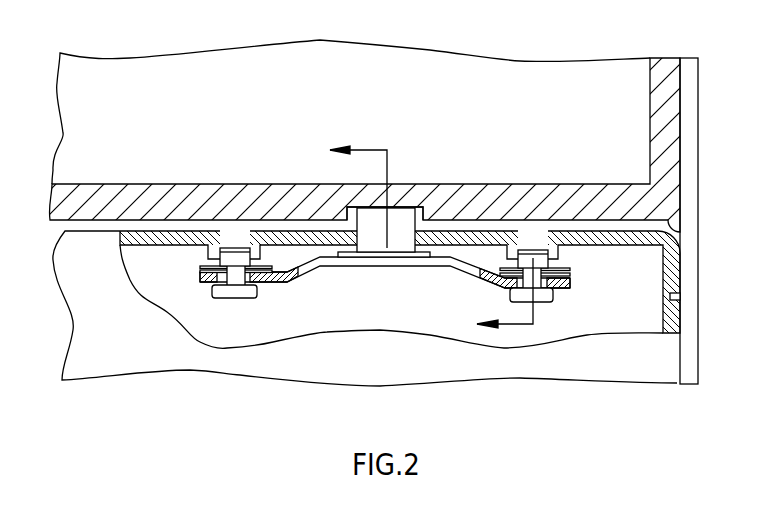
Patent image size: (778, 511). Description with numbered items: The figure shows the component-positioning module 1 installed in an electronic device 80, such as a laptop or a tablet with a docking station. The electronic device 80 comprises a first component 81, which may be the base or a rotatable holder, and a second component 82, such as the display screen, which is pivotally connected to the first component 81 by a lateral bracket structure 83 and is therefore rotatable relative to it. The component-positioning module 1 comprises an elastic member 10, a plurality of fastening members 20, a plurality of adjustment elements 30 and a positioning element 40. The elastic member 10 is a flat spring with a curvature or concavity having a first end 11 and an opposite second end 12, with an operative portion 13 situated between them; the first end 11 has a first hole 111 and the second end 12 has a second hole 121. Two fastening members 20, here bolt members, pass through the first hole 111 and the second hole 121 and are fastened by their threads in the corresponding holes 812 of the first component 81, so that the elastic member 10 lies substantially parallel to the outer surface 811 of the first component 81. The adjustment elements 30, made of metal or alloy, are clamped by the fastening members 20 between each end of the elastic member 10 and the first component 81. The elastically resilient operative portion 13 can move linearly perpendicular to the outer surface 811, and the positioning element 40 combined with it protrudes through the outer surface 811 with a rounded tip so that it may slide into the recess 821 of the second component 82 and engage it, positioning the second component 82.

The component-positioning module 1 is at (423, 301).
The elastic member 10 is at (383, 287).
The first end 11 is at (205, 279).
The first hole 111 is at (258, 281).
The second end 12 is at (570, 285).
The second hole 121 is at (510, 283).
The operative portion 13 is at (402, 263).
The fastening member 20 is at (232, 299).
The adjustment element 30 is at (205, 268).
The positioning element 40 is at (367, 248).
The electronic device 80 is at (748, 20).
The first component 81 is at (65, 281).
The outer surface 811 is at (118, 228).
The hole 812 is at (236, 248).
The second component 82 is at (668, 65).
The recess 821 is at (408, 207).
The lateral bracket structure 83 is at (690, 137).